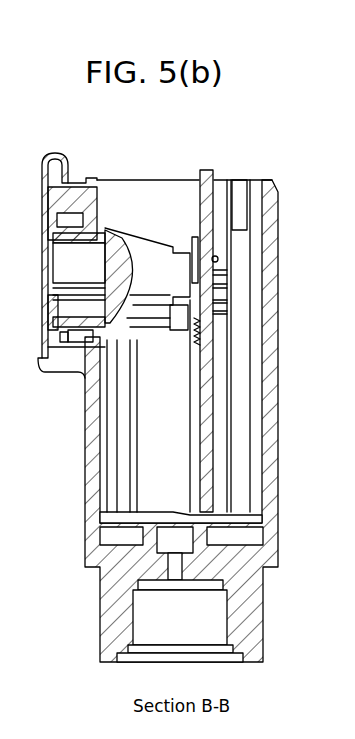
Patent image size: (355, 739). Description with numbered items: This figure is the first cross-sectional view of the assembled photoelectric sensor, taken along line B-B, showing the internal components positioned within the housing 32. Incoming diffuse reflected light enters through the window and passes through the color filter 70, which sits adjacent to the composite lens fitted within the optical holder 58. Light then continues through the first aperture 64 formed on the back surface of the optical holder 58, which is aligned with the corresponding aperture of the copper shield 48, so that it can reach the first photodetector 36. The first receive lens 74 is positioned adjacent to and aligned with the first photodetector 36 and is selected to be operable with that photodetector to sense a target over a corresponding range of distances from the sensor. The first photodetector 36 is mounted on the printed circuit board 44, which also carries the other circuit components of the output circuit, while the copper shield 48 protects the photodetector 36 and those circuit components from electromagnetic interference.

The housing 32 is at (84, 374).
The first photodetector 36 is at (223, 293).
The printed circuit board 44 is at (205, 170).
The copper shield 48 is at (173, 335).
The optical holder 58 is at (84, 248).
The first aperture 64 is at (215, 265).
The color filter 70 is at (45, 246).
The first receive lens 74 is at (55, 315).